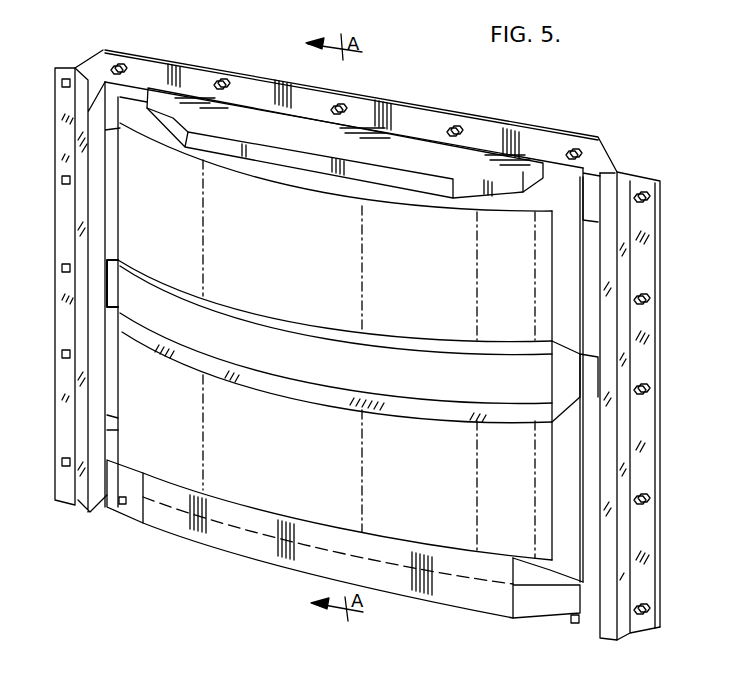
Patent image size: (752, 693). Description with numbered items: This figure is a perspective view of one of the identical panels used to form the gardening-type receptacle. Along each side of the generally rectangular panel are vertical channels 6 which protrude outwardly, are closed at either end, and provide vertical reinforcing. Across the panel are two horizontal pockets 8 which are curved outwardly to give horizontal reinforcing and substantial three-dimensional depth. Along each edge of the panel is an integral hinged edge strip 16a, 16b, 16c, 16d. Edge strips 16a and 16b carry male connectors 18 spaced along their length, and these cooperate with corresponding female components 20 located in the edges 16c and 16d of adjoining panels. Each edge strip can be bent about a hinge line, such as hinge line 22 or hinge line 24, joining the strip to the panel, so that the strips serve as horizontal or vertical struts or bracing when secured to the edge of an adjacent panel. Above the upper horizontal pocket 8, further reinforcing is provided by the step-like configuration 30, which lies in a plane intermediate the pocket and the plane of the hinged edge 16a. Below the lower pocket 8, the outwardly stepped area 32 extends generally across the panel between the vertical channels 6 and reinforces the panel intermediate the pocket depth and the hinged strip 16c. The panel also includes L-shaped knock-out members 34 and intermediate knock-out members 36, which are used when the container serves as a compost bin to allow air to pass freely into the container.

The vertical channels 6 is at (80, 120).
The horizontal pockets 8 is at (238, 485).
The hinged edge strip 16a is at (513, 130).
The hinged edge strip 16b is at (650, 403).
The hinged edge strip 16c is at (562, 620).
The hinged edge strip 16d is at (63, 430).
The male connectors 18 is at (345, 108).
The female components 20 is at (68, 181).
The hinge line 22 is at (600, 173).
The hinge line 24 is at (633, 283).
The step-like configuration 30 is at (245, 135).
The outwardly stepped area 32 is at (468, 590).
The L-shaped knock-out members 34 is at (110, 97).
The intermediate knock-out members 36 is at (115, 282).